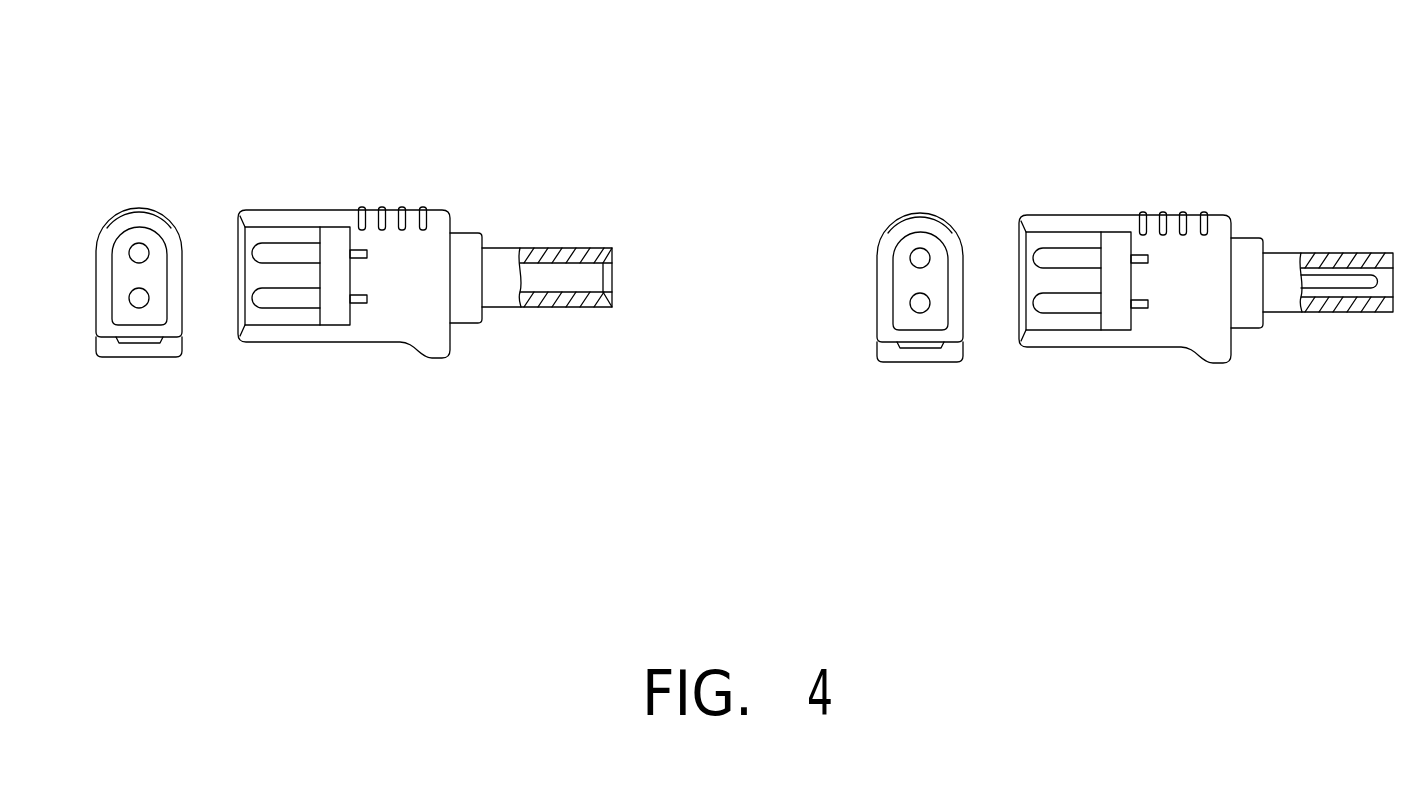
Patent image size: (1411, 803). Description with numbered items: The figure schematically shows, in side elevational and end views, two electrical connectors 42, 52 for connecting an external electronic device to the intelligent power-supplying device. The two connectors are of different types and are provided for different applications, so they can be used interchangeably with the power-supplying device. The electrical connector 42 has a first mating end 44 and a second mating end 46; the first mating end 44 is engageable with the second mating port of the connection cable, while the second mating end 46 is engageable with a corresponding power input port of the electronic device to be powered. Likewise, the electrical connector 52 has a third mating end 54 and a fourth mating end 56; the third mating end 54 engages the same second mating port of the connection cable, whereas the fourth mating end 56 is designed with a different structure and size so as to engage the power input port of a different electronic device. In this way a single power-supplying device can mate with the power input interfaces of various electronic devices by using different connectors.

The electrical connector 42 is at (391, 221).
The first mating end 44 is at (138, 207).
The second mating end 46 is at (545, 248).
The electrical connector 52 is at (1133, 227).
The third mating end 54 is at (918, 212).
The fourth mating end 56 is at (1325, 252).